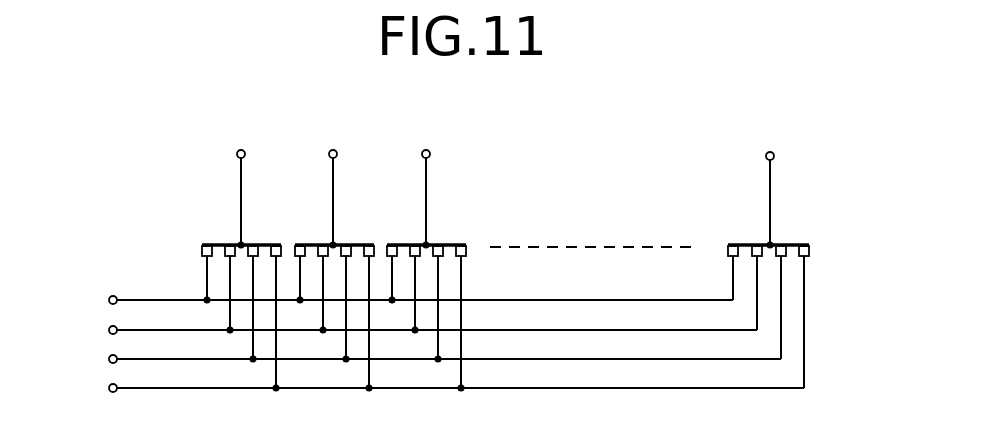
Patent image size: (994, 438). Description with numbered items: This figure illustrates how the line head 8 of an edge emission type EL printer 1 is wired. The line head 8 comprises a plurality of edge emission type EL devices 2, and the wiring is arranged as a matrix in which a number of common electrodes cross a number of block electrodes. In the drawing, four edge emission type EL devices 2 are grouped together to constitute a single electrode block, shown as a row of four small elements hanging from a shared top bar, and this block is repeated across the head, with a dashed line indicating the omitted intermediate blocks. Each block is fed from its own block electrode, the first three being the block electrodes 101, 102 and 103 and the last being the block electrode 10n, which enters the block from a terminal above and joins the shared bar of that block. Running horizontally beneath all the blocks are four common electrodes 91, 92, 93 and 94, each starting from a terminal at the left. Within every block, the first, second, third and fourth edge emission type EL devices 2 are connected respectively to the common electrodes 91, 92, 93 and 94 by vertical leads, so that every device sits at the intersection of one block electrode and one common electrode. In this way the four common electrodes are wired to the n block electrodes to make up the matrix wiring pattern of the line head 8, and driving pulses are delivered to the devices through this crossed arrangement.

The edge emission type EL printer 1 is at (644, 103).
The edge emission type EL device 2 is at (228, 243).
The line head 8 is at (806, 273).
The common electrode 91 is at (402, 300).
The common electrode 92 is at (414, 330).
The common electrode 93 is at (426, 359).
The common electrode 94 is at (437, 388).
The block electrode 101 is at (245, 181).
The block electrode 102 is at (336, 181).
The block electrode 103 is at (430, 181).
The block electrode 10n is at (776, 181).